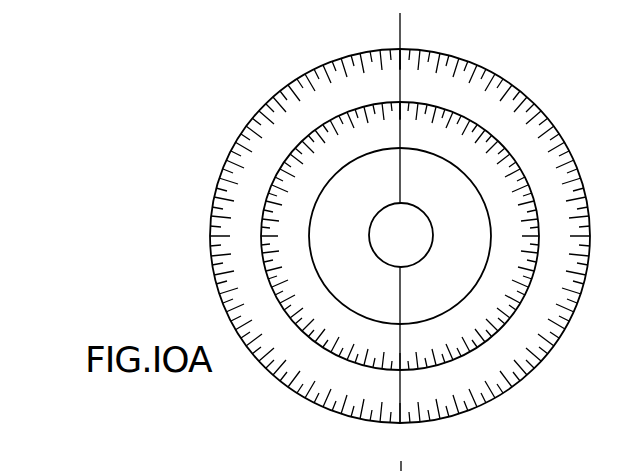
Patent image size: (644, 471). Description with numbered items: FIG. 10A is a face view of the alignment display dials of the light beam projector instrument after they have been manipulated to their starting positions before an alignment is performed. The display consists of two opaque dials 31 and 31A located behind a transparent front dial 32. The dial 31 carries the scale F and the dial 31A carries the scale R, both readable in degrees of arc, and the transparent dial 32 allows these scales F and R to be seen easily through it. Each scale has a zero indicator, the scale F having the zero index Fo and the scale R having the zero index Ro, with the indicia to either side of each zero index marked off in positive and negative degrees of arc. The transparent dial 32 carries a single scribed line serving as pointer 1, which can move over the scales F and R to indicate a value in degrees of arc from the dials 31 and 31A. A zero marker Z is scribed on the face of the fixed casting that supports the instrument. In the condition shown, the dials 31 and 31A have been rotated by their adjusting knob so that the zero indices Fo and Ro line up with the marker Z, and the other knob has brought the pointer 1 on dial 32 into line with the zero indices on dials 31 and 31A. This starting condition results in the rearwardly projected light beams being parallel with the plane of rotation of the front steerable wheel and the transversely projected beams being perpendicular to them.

The pointer 1 is at (398, 179).
The opaque dial 31 is at (263, 107).
The opaque dial 31A is at (275, 173).
The transparent front dial 32 is at (210, 270).
The scale F is at (474, 72).
The scale R is at (530, 112).
The zero indicator Fo is at (390, 82).
The zero indicator Ro is at (388, 126).
The zero marker Z is at (404, 24).